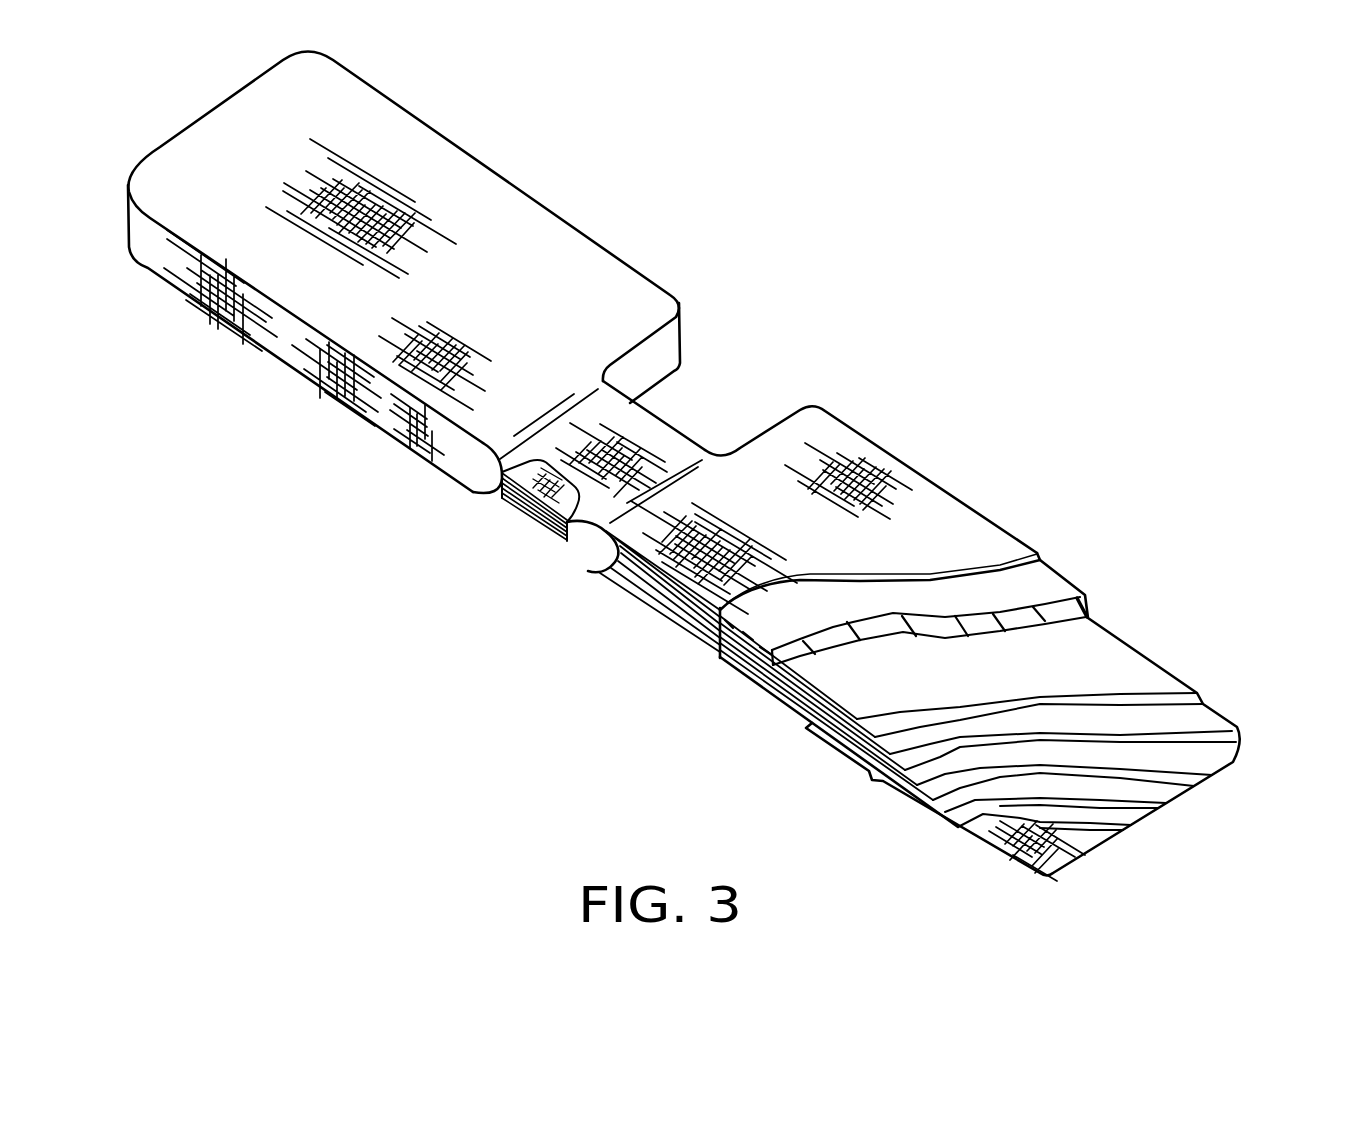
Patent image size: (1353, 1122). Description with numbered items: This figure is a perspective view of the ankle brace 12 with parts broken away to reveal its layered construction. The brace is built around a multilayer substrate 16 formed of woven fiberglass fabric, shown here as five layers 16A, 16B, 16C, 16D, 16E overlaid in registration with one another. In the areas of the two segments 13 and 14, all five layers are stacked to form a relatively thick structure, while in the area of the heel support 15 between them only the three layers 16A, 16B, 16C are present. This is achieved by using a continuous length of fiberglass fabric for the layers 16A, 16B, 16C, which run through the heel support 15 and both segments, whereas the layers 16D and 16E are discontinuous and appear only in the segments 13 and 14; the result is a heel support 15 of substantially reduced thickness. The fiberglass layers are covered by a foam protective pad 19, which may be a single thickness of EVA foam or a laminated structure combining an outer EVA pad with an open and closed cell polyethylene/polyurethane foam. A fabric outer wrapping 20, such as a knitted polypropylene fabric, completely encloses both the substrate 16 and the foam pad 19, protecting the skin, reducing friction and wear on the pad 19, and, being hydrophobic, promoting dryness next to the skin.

The ankle brace 12 is at (758, 236).
The segment 13 is at (323, 96).
The segment 14 is at (980, 537).
The heel support 15 is at (665, 458).
The multilayer substrate 16 is at (871, 668).
The fiberglass layer 16A is at (1112, 818).
The fiberglass layer 16B is at (1143, 792).
The fiberglass layer 16C is at (1182, 757).
The fiberglass layer 16D is at (1187, 722).
The fiberglass layer 16E is at (1147, 680).
The foam protective pad 19 is at (788, 616).
The fabric outer wrapping 20 is at (845, 471).